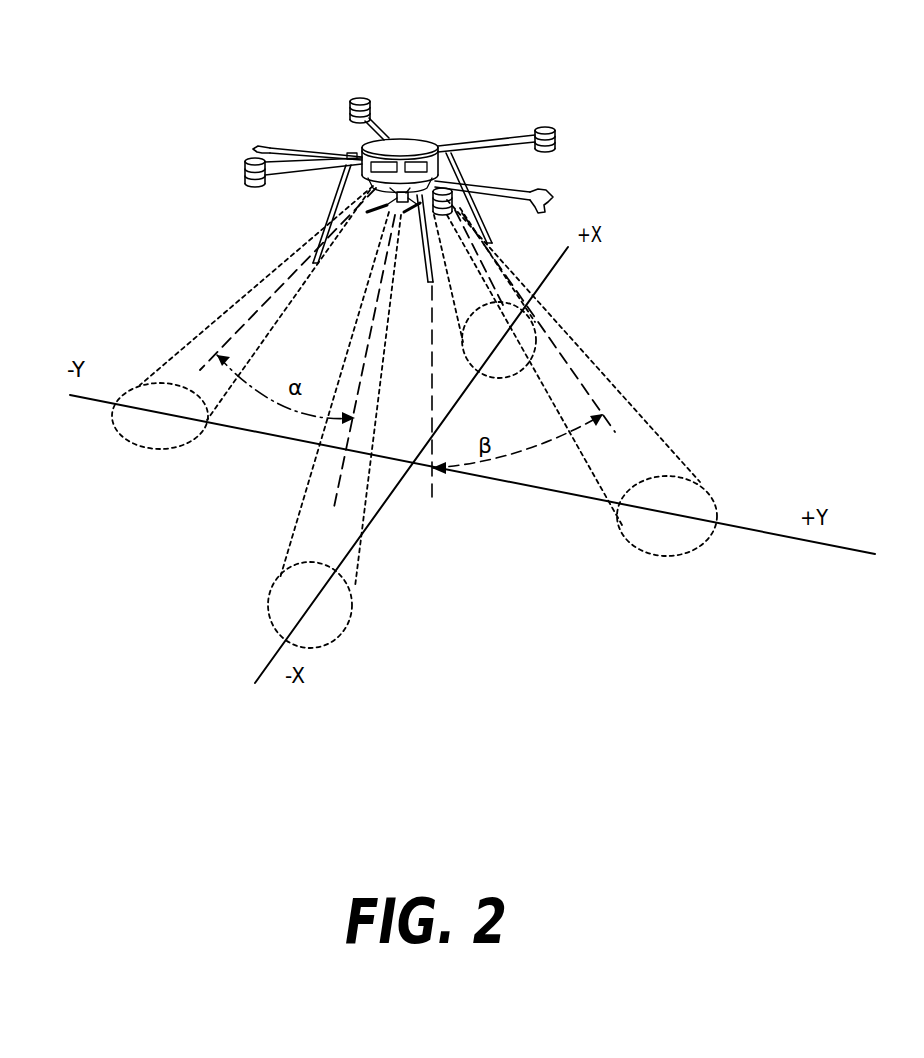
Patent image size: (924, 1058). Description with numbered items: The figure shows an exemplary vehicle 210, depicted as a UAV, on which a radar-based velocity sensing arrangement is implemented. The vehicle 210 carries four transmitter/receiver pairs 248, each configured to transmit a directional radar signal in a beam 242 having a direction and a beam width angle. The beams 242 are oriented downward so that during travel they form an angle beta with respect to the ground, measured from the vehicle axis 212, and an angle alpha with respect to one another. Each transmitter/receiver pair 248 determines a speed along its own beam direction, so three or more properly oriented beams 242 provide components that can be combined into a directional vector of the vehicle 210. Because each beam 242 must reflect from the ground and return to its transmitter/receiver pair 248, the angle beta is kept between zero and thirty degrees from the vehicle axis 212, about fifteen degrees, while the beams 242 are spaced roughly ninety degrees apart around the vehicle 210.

The vehicle 210 is at (400, 159).
The vehicle axis 212 is at (433, 395).
The beam 242 is at (209, 318).
The transmitter/receiver pair 248 is at (398, 200).